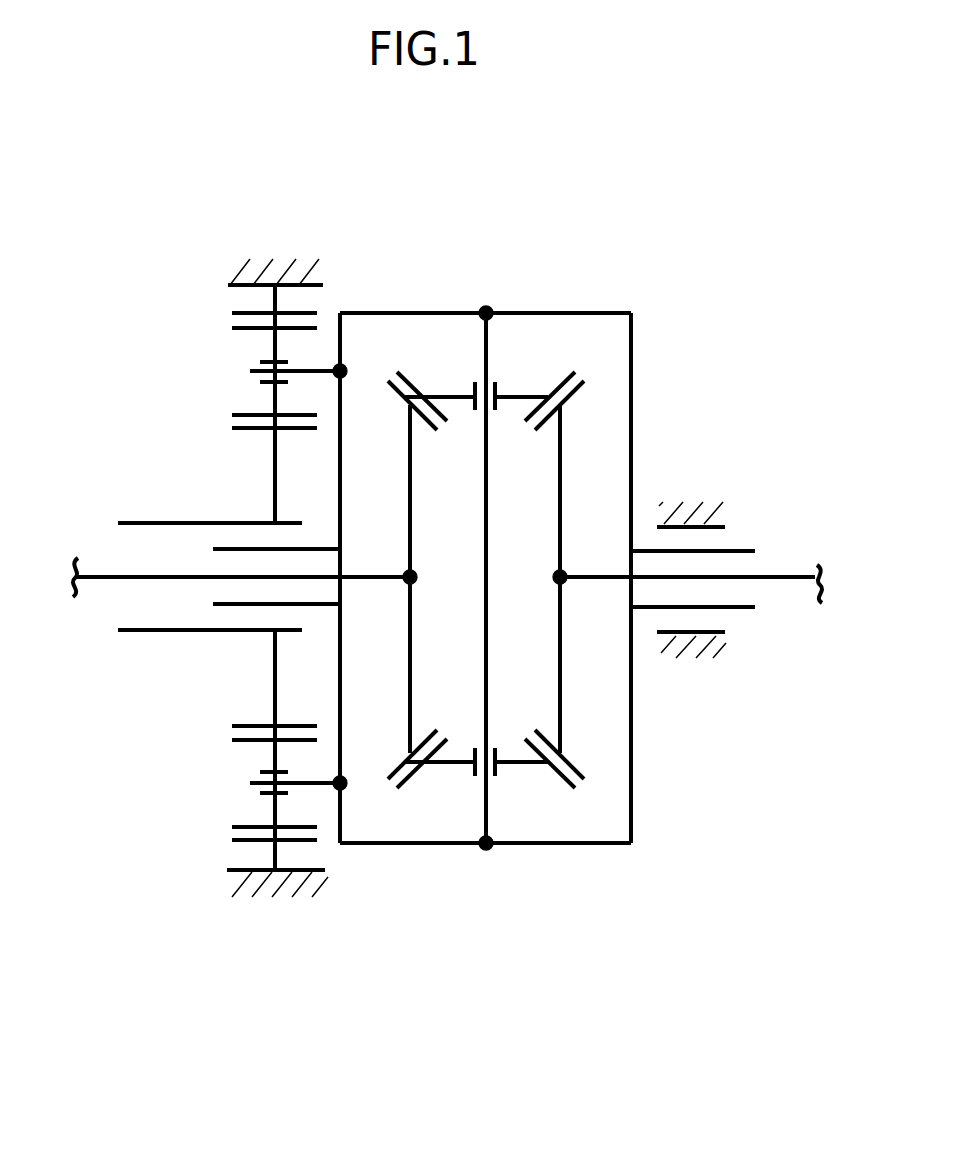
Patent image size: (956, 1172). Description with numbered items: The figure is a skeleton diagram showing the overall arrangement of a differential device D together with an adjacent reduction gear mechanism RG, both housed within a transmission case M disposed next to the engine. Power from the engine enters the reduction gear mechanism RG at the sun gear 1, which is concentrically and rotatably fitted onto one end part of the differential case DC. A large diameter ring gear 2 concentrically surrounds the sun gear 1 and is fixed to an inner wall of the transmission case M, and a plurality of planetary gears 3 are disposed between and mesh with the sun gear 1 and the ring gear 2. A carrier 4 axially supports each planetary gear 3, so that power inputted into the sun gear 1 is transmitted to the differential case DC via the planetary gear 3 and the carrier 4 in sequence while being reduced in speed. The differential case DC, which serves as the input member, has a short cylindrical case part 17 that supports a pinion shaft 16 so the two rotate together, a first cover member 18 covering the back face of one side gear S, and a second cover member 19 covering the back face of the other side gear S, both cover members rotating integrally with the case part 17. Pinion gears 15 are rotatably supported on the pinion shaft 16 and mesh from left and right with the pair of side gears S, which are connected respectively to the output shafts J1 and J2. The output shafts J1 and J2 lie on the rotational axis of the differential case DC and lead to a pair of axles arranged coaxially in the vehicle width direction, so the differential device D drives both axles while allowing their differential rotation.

The sun gear 1 is at (240, 428).
The ring gear 2 is at (233, 313).
The planetary gear 3 is at (240, 415).
The carrier 4 is at (257, 368).
The pinion gear 15 is at (410, 777).
The pinion shaft 16 is at (488, 548).
The case part 17 is at (437, 312).
The first cover member 18 is at (340, 427).
The second cover member 19 is at (633, 432).
The side gear S is at (433, 727).
The differential device D is at (545, 872).
The differential case DC is at (588, 310).
The transmission case M is at (267, 267).
The output shaft J1 is at (107, 580).
The output shaft J2 is at (788, 577).
The reduction gear mechanism RG is at (100, 325).